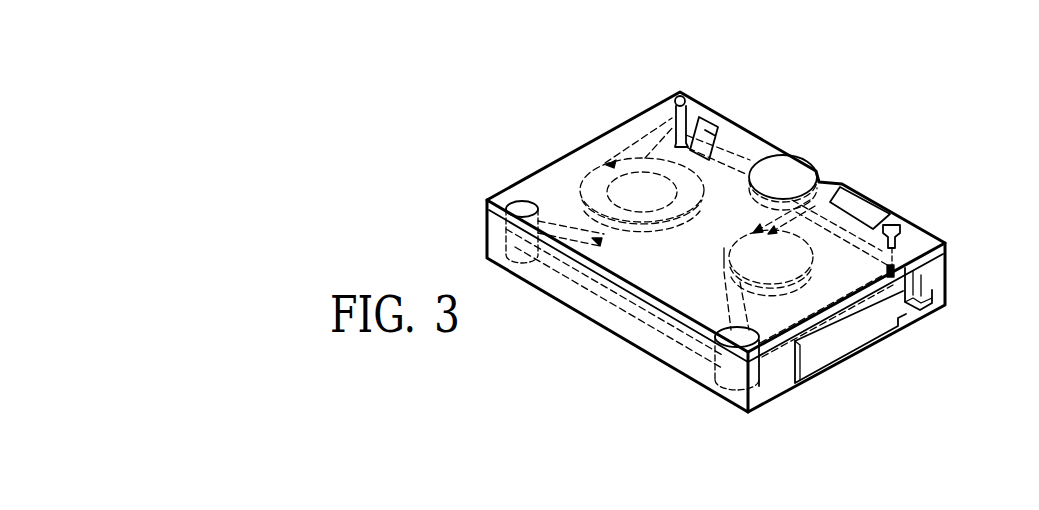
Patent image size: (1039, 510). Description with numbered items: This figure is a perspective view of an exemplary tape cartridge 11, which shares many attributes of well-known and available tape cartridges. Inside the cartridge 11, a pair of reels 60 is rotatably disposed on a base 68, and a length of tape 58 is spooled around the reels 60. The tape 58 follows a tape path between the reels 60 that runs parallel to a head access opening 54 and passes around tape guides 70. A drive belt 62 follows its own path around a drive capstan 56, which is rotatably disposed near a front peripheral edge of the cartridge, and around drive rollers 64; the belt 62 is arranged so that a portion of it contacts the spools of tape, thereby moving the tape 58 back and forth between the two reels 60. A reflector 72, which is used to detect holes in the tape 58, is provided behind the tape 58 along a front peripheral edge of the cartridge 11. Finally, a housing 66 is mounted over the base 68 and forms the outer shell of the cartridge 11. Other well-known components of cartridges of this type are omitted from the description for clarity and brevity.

The tape cartridge 11 is at (887, 356).
The head access opening 54 is at (862, 207).
The drive capstan 56 is at (815, 162).
The tape 58 is at (737, 152).
The reels 60 is at (618, 192).
The drive belt 62 is at (560, 222).
The drive rollers 64 is at (462, 189).
The housing 66 is at (916, 240).
The base 68 is at (943, 293).
The tape guides 70 is at (676, 95).
The reflector 72 is at (708, 118).